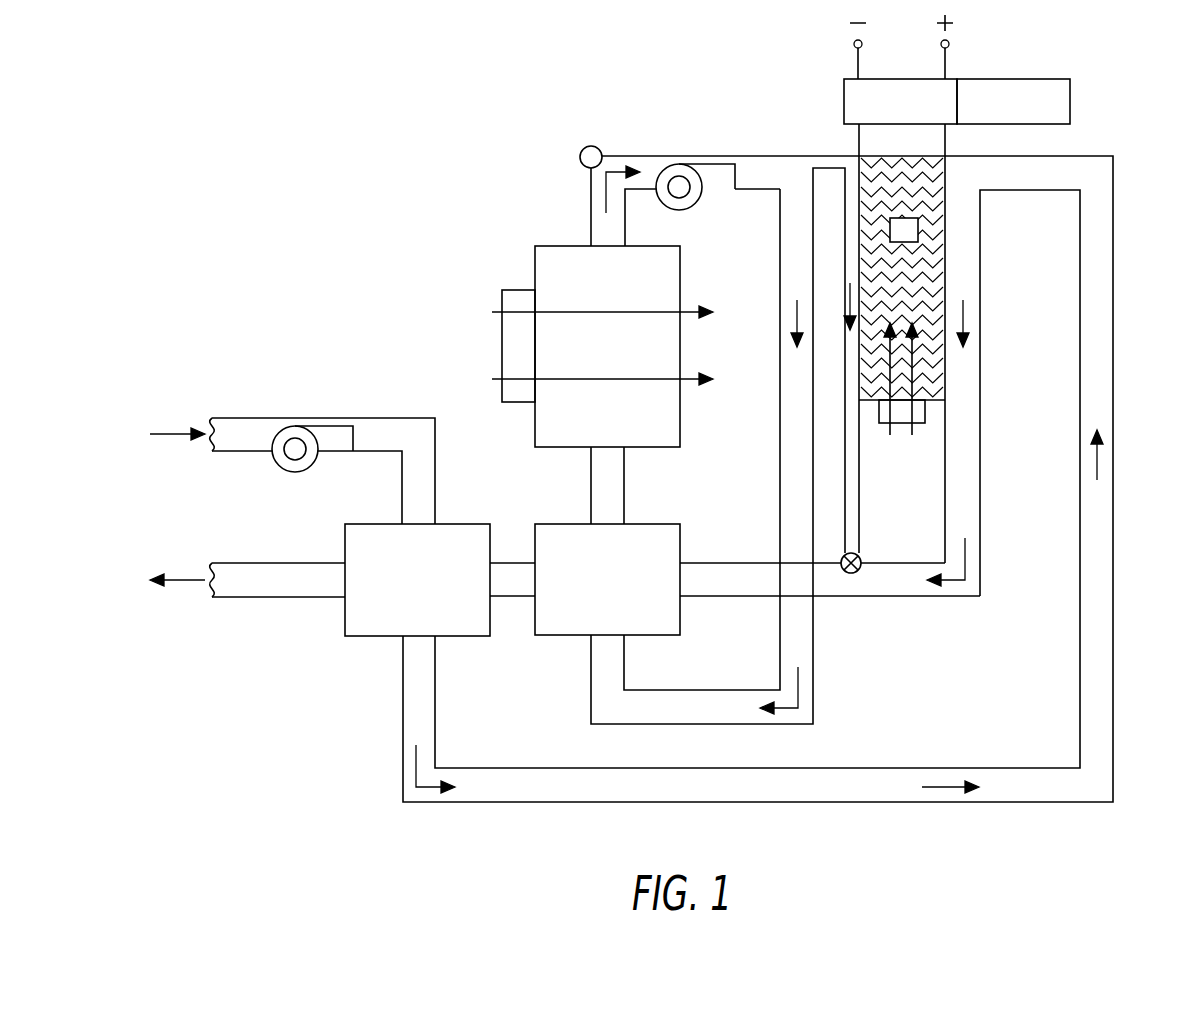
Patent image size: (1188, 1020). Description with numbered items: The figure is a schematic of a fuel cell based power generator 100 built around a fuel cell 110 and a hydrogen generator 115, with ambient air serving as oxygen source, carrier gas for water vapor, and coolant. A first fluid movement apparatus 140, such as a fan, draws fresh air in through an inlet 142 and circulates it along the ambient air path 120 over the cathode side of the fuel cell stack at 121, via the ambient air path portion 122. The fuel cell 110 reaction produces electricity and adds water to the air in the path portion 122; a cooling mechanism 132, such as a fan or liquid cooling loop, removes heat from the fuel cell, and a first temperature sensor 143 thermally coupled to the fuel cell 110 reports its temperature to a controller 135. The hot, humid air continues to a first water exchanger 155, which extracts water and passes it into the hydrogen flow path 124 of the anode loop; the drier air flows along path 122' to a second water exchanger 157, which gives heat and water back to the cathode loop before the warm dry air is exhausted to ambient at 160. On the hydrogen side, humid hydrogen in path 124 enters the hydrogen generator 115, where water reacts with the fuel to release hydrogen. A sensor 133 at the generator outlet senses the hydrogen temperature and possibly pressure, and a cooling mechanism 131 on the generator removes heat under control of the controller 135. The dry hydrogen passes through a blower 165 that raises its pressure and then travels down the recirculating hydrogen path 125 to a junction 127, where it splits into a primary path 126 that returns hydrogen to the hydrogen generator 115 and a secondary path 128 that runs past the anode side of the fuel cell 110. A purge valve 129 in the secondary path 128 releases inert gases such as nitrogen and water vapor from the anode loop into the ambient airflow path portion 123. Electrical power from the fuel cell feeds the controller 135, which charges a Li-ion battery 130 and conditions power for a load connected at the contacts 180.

The power generator 100 is at (256, 93).
The fuel cell 110 is at (949, 343).
The hydrogen generator 115 is at (538, 273).
The ambient air path 120 is at (1120, 301).
The cathode side of the fuel cell stack 121 is at (948, 350).
The ambient air path portion 122 is at (830, 613).
The path 122' is at (501, 622).
The ambient airflow path portion 123 is at (712, 567).
The hydrogen flow path 124 is at (606, 488).
The recirculating hydrogen path 125 is at (752, 172).
The primary path 126 is at (783, 455).
The junction 127 is at (765, 148).
The secondary path 128 is at (856, 485).
The purge valve 129 is at (862, 556).
The Li-ion battery 130 is at (1071, 97).
The cooling mechanism 131 is at (505, 347).
The cooling mechanism 132 is at (918, 413).
The sensor 133 is at (585, 148).
The controller 135 is at (844, 94).
The first fluid movement apparatus 140 is at (286, 467).
The inlet 142 is at (246, 421).
The first temperature sensor 143 is at (922, 229).
The first water exchanger 155 is at (558, 628).
The second water exchanger 157 is at (369, 628).
The exhaust 160 is at (246, 570).
The blower 165 is at (684, 168).
The contacts 180 is at (858, 62).